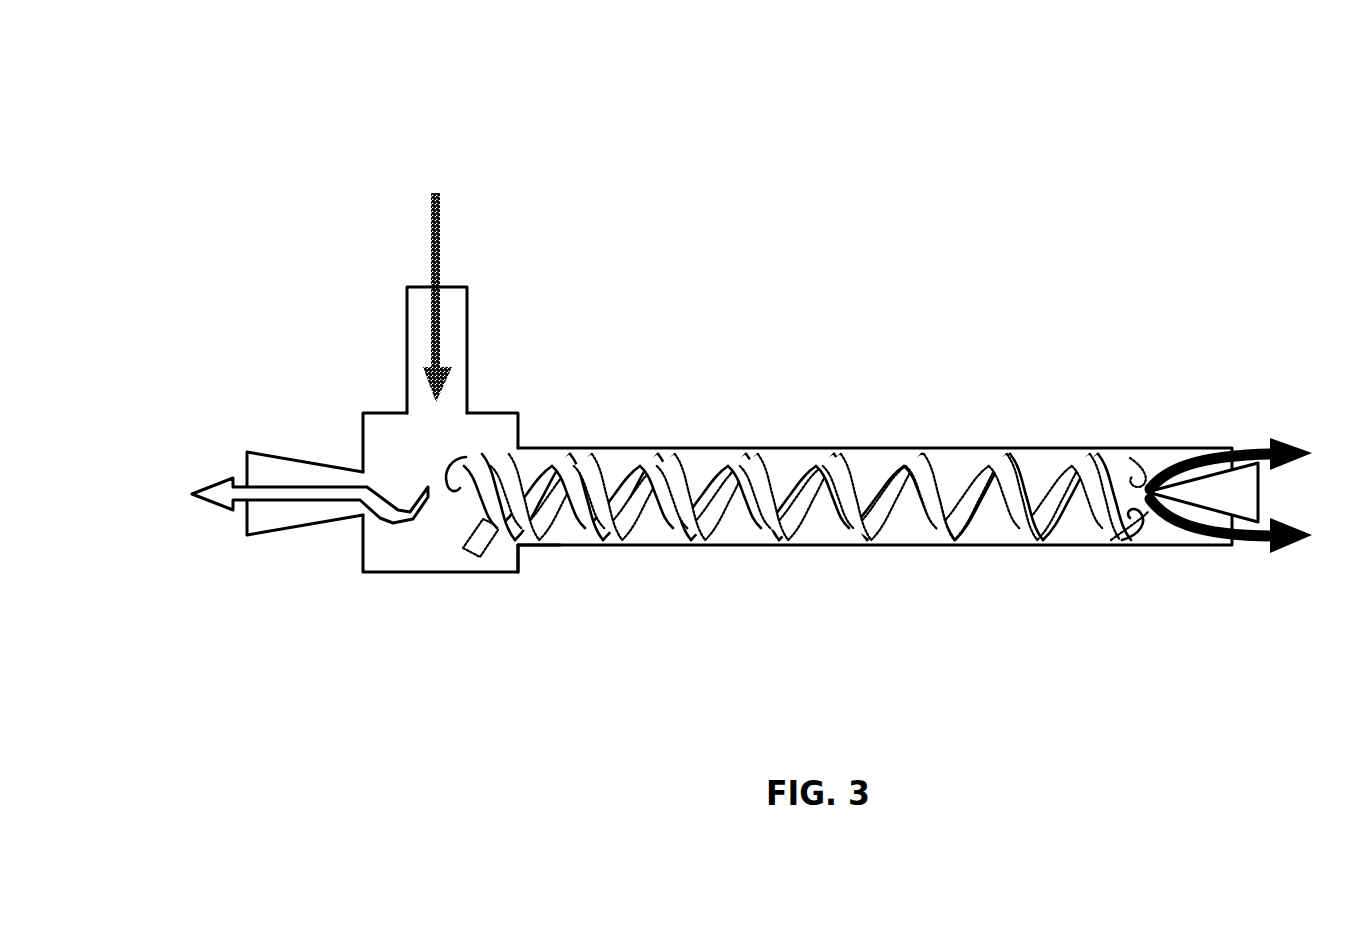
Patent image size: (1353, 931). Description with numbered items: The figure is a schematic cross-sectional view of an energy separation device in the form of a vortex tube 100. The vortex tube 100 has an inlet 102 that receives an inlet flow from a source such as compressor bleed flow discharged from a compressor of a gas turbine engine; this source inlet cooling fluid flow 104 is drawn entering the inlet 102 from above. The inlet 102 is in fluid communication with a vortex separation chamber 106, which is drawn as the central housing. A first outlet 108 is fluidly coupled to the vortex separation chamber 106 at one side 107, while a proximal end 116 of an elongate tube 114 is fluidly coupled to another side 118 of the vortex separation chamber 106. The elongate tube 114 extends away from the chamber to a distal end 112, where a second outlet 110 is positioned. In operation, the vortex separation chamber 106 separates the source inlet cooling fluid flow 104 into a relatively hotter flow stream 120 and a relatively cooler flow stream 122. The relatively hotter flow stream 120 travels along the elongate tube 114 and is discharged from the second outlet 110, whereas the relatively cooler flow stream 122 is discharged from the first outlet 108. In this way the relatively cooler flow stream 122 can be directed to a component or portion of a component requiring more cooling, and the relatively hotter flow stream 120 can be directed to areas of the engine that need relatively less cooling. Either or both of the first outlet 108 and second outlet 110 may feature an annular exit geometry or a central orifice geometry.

The vortex tube 100 is at (820, 234).
The inlet 102 is at (453, 305).
The source inlet cooling fluid flow 104 is at (432, 226).
The vortex separation chamber 106 is at (487, 435).
The one side 107 is at (363, 545).
The first outlet 108 is at (270, 515).
The second outlet 110 is at (1205, 547).
The distal end 112 is at (1135, 543).
The elongate tube 114 is at (793, 547).
The proximal end 116 is at (548, 547).
The another side 118 is at (518, 545).
The relatively hotter flow stream 120 is at (1292, 522).
The relatively cooler flow stream 122 is at (218, 482).